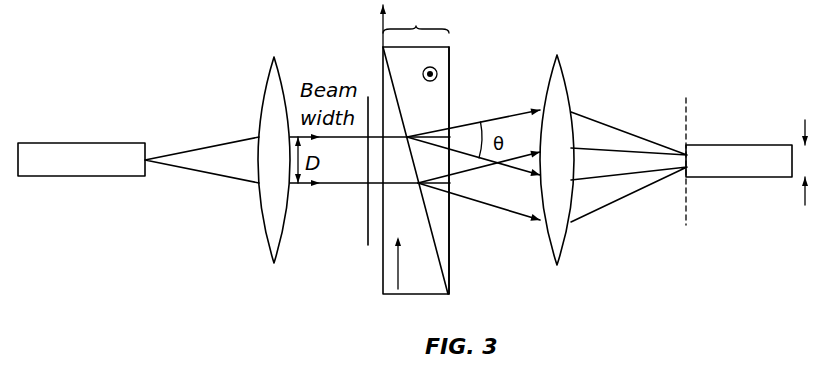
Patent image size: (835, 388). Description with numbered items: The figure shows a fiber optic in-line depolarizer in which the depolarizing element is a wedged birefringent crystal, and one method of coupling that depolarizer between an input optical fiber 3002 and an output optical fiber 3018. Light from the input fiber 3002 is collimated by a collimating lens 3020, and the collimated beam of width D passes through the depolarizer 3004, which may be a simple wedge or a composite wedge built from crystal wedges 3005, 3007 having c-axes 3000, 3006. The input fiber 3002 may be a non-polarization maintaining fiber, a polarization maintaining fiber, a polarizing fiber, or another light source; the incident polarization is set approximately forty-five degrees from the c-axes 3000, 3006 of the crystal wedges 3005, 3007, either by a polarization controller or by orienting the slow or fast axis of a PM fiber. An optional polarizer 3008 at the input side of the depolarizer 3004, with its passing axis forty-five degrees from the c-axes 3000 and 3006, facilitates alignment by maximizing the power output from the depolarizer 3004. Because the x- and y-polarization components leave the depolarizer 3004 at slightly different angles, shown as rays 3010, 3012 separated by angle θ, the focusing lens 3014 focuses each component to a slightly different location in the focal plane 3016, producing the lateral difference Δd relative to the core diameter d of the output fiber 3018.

The c-axis 3000 is at (398, 271).
The input optical fiber 3002 is at (110, 143).
The depolarizer 3004 is at (405, 148).
The crystal wedge 3005 is at (388, 70).
The c-axis 3006 is at (437, 73).
The crystal wedge 3007 is at (439, 256).
The polarizer 3008 is at (366, 229).
The refracted ray 3010 is at (480, 124).
The refracted ray 3012 is at (497, 207).
The focusing lens 3014 is at (557, 56).
The focal plane 3016 is at (688, 110).
The output optical fiber 3018 is at (727, 145).
The collimating lens 3020 is at (272, 57).